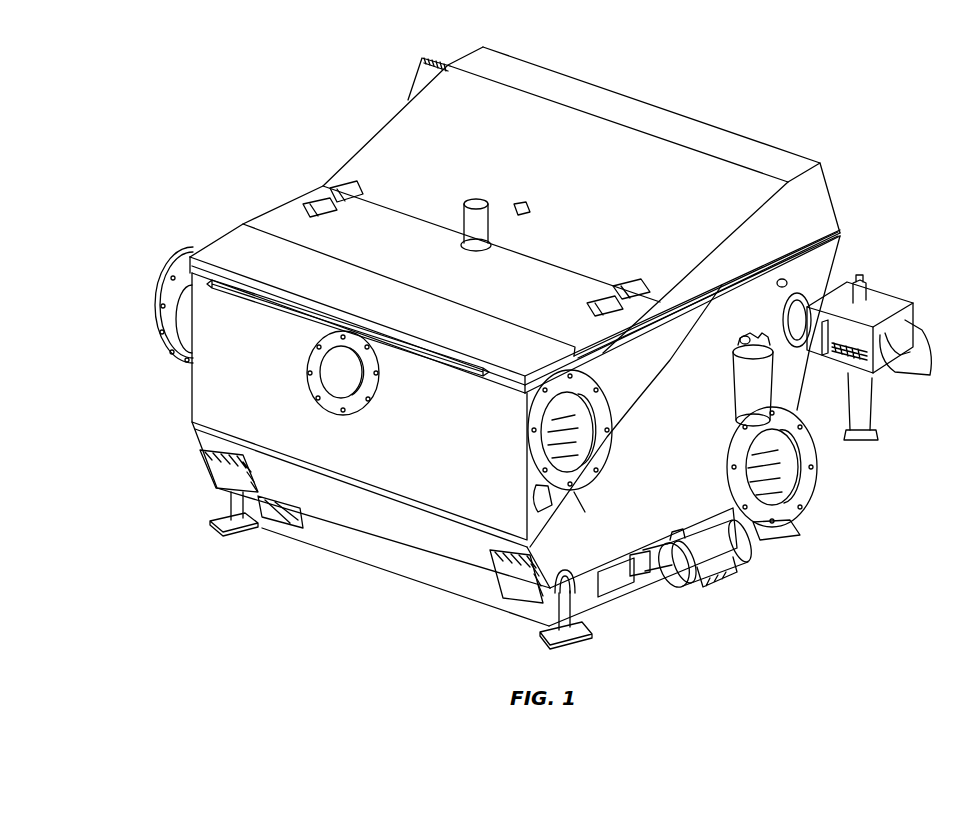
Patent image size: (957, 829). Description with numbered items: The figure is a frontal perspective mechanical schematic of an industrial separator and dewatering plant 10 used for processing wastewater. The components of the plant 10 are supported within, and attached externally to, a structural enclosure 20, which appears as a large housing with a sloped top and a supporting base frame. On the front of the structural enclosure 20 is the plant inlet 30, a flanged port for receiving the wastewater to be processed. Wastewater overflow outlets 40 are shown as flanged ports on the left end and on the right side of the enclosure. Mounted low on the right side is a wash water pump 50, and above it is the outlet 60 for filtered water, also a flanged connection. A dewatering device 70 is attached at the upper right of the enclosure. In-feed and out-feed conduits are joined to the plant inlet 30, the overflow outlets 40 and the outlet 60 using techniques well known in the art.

The industrial separator and dewatering plant 10 is at (708, 68).
The structural enclosure 20 is at (205, 373).
The plant inlet 30 is at (335, 378).
The wastewater overflow outlets 40 is at (162, 320).
The wash water pump 50 is at (732, 544).
The outlet 60 is at (785, 470).
The dewatering device 70 is at (880, 310).